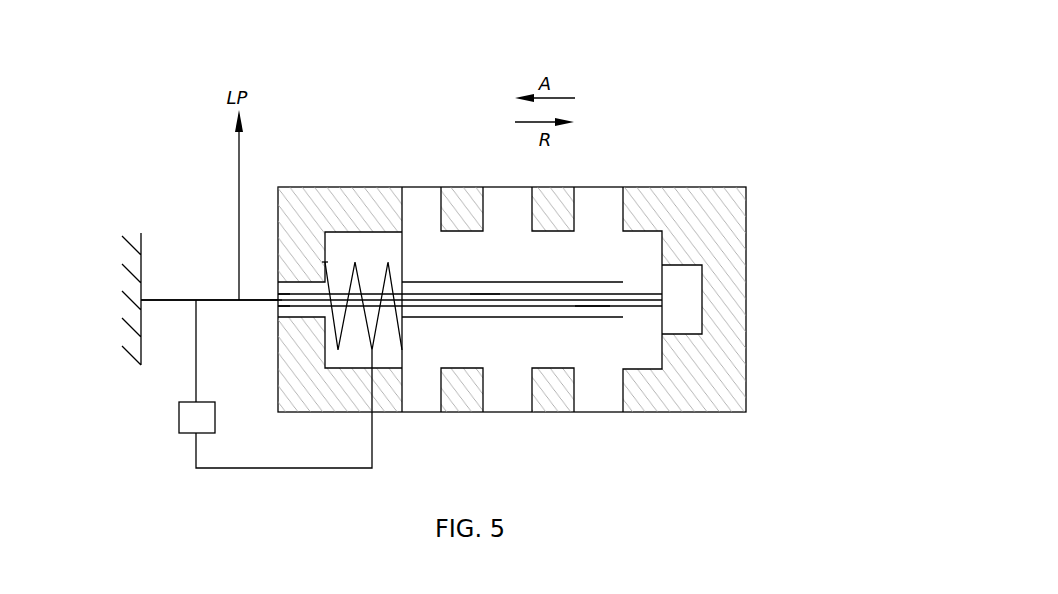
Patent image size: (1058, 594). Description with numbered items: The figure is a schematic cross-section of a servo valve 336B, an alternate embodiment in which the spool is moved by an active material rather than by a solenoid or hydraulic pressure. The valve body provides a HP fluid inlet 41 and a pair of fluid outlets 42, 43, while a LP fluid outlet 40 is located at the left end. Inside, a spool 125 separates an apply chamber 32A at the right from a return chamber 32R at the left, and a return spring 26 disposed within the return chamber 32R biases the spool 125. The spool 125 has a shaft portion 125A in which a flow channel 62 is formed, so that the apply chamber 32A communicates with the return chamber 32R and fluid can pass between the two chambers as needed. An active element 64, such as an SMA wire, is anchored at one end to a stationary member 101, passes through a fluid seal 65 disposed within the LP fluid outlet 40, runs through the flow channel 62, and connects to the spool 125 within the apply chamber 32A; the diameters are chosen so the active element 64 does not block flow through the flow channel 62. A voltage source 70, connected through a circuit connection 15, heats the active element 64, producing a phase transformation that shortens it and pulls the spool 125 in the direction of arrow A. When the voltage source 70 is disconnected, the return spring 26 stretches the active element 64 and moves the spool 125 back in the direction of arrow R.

The servo valve 336B is at (768, 154).
The return chamber 32R is at (358, 246).
The apply chamber 32A is at (688, 277).
The HP fluid inlet 41 is at (402, 208).
The fluid outlet 42 is at (515, 200).
The fluid outlet 43 is at (613, 200).
The spool 125 is at (633, 280).
The shaft portion 125A is at (484, 290).
The flow channel 62 is at (592, 302).
The LP fluid outlet 40 is at (278, 300).
The fluid seal 65 is at (278, 301).
The return spring 26 is at (367, 325).
The active element 64 is at (163, 300).
The circuit connection 15 is at (195, 338).
The voltage source 70 is at (215, 410).
The stationary member 101 is at (133, 362).